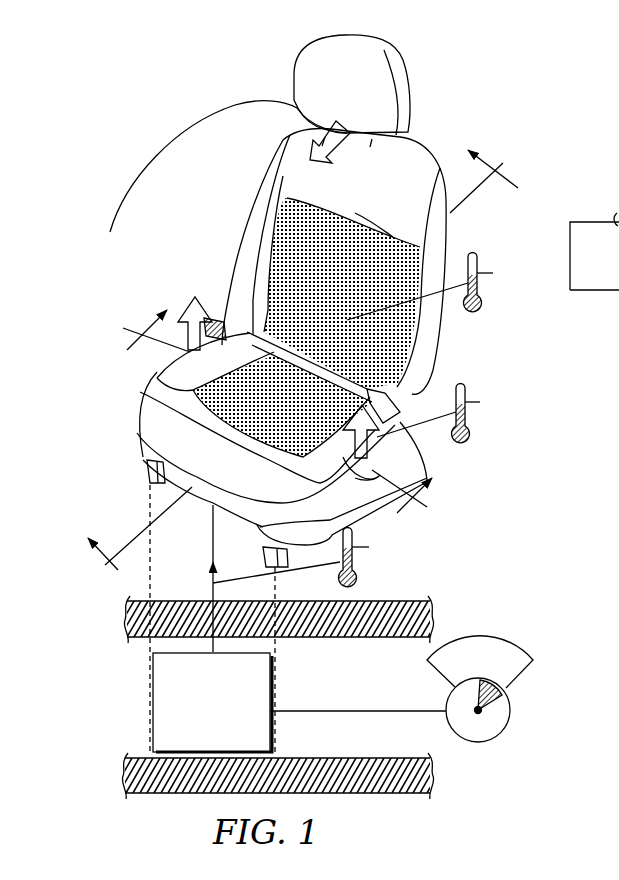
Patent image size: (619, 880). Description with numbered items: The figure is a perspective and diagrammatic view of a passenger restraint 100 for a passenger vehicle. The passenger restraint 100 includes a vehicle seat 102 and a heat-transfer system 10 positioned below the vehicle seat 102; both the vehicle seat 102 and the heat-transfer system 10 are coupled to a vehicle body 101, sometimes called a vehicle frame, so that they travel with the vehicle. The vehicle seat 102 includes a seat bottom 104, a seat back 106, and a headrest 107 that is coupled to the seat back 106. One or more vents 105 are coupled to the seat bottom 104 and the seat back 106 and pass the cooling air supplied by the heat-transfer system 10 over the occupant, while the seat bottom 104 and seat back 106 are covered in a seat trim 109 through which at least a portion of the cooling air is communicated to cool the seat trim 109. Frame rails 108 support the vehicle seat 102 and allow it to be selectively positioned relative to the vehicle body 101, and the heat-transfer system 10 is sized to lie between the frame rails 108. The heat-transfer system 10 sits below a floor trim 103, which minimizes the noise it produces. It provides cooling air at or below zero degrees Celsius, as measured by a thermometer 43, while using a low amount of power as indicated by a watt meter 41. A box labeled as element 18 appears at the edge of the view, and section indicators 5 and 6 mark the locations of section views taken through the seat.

The passenger restraint 100 is at (523, 126).
The vehicle seat 102 is at (237, 193).
The seat bottom 104 is at (186, 421).
The vents 105 is at (160, 375).
The seat back 106 is at (392, 192).
The headrest 107 is at (372, 96).
The frame rails 108 is at (145, 471).
The seat trim 109 is at (253, 387).
The floor trim 103 is at (425, 617).
The vehicle body 101 is at (143, 774).
The heat-transfer system 10 is at (122, 684).
The watt meter 41 is at (500, 650).
The thermometer 43 is at (353, 537).
The heating unit 18 is at (618, 505).
The section line 5- 5 is at (273, 422).
The section line 6- 6 is at (306, 374).